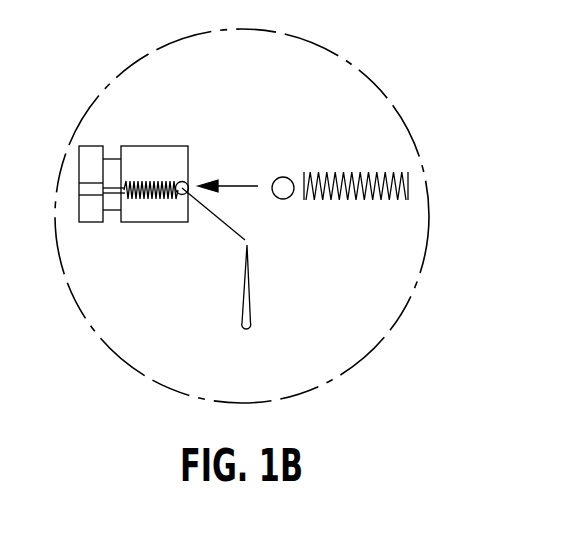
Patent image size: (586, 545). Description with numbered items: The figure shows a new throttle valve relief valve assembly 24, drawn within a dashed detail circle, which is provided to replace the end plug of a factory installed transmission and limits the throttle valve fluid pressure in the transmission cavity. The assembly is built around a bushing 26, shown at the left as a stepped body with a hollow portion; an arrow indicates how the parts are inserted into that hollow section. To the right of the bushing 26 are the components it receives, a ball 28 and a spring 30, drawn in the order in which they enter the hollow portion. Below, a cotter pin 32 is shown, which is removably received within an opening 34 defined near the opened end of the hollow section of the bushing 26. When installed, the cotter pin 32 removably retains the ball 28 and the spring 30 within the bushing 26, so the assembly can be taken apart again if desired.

The TV relief valve assembly 24 is at (364, 361).
The bushing 26 is at (143, 146).
The ball 28 is at (283, 177).
The spring 30 is at (366, 172).
The cotter pin 32 is at (250, 318).
The opening 34 is at (186, 181).